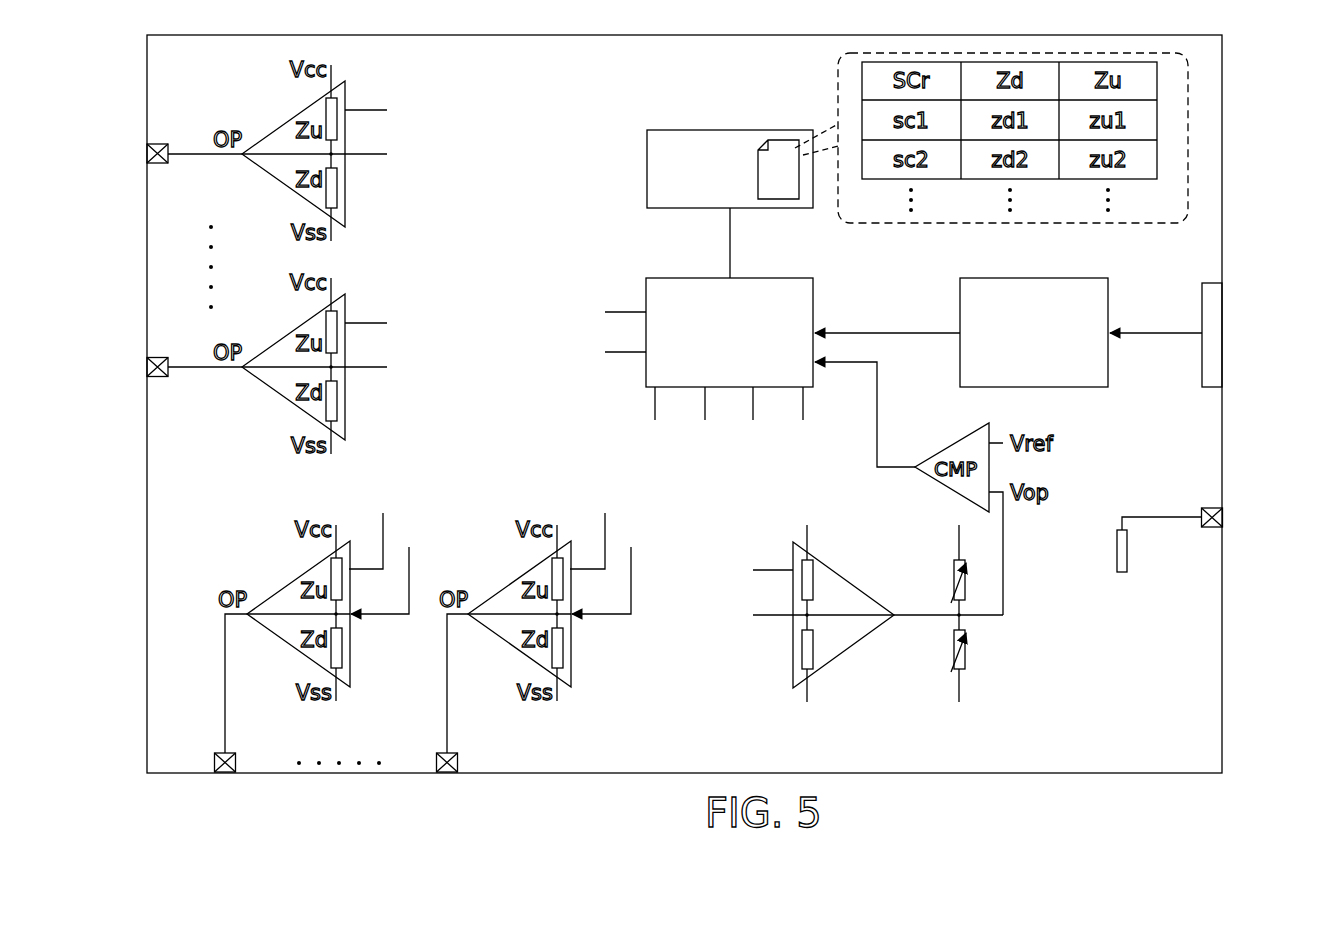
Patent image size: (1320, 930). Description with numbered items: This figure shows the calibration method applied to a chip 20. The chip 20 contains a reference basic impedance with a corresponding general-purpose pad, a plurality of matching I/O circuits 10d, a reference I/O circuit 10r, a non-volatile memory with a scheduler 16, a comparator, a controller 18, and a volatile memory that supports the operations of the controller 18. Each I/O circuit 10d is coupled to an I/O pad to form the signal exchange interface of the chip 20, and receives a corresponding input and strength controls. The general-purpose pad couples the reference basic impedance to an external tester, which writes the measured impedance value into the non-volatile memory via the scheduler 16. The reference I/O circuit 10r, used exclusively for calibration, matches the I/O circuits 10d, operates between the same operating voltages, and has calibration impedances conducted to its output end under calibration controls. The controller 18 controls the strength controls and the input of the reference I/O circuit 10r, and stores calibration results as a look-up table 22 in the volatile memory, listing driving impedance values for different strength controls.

The matching I/O circuit 10d is at (347, 212).
The reference I/O circuit 10r is at (793, 674).
The scheduler 16 is at (1201, 383).
The controller 18 is at (700, 277).
The chip 20 is at (1222, 607).
The look-up table 22 is at (767, 182).